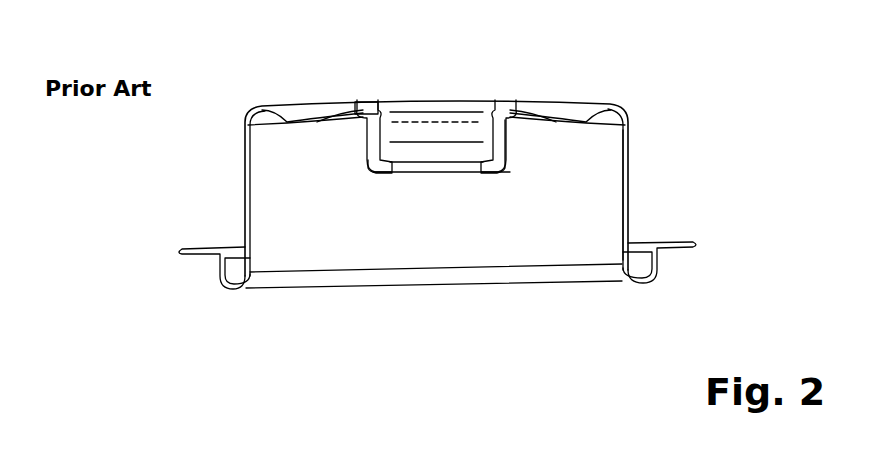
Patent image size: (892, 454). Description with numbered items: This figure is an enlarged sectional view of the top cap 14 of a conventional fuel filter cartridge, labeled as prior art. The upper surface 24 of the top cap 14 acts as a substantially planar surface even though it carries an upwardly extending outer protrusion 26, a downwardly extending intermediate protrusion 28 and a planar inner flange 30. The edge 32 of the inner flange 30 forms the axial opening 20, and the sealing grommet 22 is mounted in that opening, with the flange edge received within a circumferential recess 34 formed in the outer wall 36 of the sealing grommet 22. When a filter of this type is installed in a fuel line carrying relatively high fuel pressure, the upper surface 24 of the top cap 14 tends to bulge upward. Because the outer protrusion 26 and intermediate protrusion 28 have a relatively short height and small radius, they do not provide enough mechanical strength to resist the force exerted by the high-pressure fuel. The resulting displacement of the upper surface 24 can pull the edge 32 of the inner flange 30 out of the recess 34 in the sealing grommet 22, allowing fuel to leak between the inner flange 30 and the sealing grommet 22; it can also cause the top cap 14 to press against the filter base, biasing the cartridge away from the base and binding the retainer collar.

The top cap 14 is at (671, 62).
The axial opening 20 is at (450, 74).
The sealing grommet 22 is at (508, 100).
The upper surface 24 is at (325, 101).
The outer protrusion 26 is at (610, 102).
The intermediate protrusion 28 is at (567, 120).
The inner flange 30 is at (364, 118).
The edge 32 is at (508, 124).
The circumferential recess 34 is at (372, 106).
The outer wall 36 is at (364, 158).